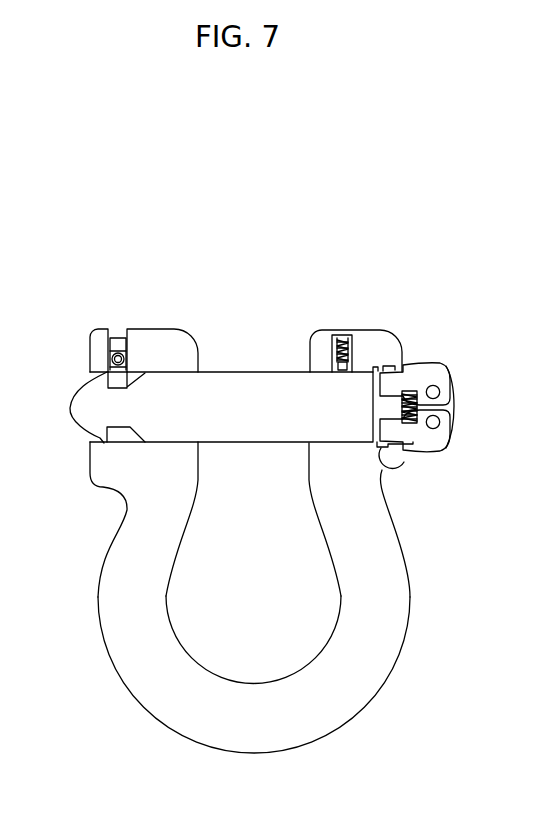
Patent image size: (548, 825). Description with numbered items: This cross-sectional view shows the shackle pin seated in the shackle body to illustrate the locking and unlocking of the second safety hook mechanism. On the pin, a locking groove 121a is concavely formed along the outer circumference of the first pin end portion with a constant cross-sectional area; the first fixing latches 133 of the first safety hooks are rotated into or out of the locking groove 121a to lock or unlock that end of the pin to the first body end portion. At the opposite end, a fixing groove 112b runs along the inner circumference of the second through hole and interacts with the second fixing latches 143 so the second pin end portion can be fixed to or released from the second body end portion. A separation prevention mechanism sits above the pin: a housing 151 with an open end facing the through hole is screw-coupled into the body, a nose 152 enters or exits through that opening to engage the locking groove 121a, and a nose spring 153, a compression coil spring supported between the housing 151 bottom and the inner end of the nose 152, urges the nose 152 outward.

The first fixing latches 133 is at (116, 373).
The locking groove 121a is at (112, 388).
The housing 151 is at (335, 352).
The nose 152 is at (352, 367).
The nose spring 153 is at (346, 365).
The fixing groove 112b is at (402, 448).
The second fixing latches 143 is at (382, 479).